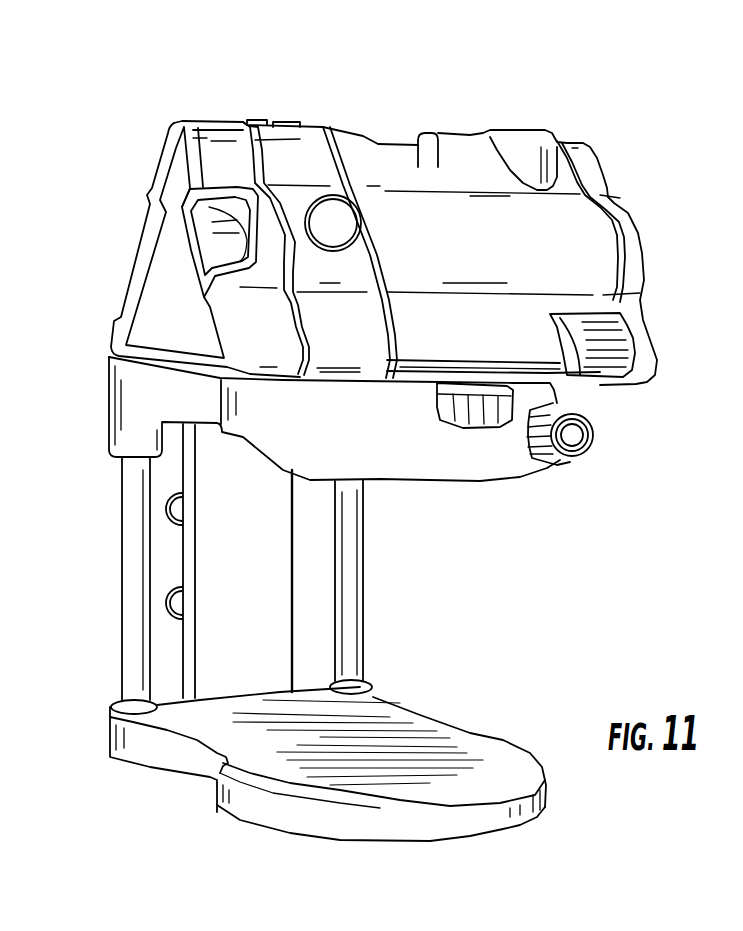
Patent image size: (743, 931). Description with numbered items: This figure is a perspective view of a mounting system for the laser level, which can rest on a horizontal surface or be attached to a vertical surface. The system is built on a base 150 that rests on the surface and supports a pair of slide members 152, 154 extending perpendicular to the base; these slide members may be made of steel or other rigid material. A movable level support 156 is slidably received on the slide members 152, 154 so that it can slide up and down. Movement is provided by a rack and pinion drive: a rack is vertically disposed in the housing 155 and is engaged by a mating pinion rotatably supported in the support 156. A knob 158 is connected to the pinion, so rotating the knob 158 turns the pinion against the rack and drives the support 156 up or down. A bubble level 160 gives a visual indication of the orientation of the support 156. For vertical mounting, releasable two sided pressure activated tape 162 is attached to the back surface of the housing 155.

The base 150 is at (452, 820).
The slide member 152 is at (132, 556).
The slide member 154 is at (346, 556).
The housing 155 is at (242, 640).
The level support 156 is at (381, 452).
The knob 158 is at (560, 404).
The bubble level 160 is at (466, 396).
The two sided pressure activated tape 162 is at (165, 605).